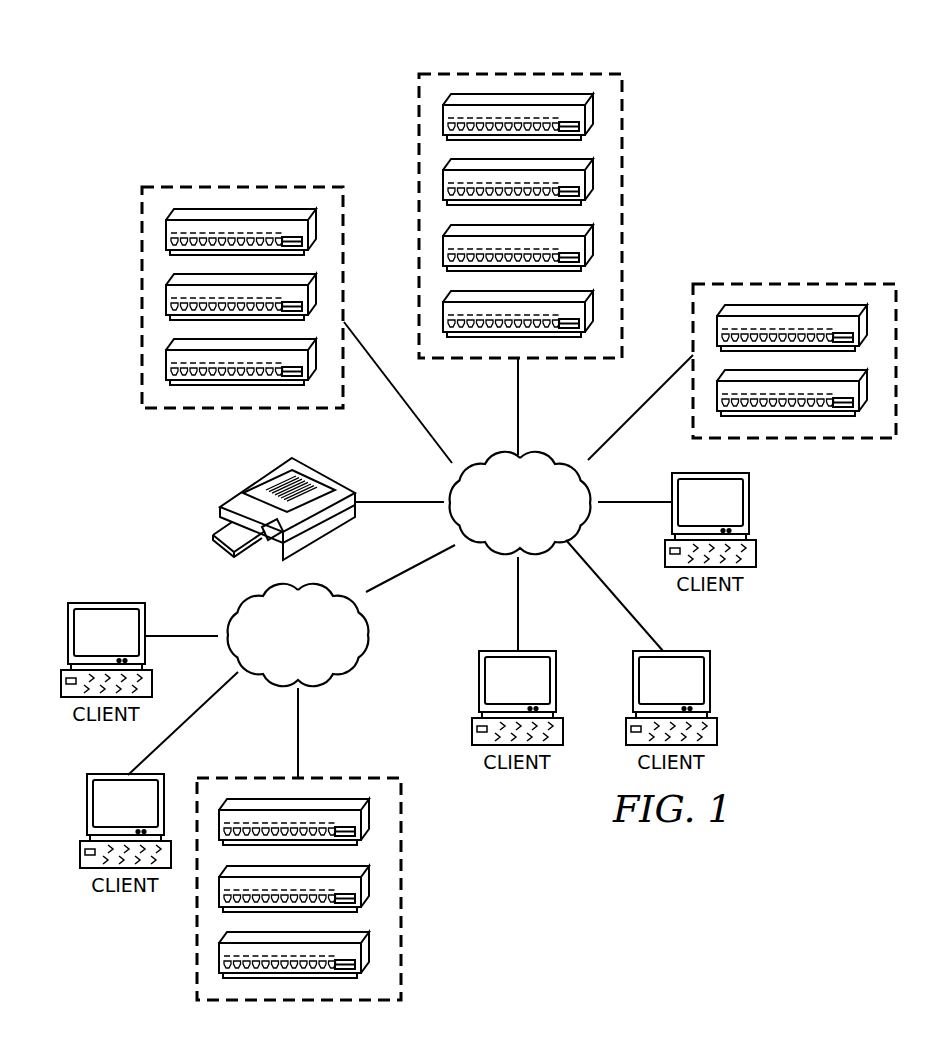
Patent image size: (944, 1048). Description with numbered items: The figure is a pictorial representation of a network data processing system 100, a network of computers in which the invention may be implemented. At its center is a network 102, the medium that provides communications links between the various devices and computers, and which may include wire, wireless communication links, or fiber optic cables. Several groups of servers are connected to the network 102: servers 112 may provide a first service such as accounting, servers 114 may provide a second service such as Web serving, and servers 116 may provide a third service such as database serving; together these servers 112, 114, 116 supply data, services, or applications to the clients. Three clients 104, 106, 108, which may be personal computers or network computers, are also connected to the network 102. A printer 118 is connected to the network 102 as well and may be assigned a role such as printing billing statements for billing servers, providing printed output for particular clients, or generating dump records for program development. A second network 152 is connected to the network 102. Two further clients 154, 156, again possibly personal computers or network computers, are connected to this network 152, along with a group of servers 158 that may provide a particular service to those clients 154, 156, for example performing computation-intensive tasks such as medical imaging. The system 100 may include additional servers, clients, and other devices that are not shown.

The network data processing system 100 is at (706, 160).
The network 102 is at (488, 452).
The client 104 is at (748, 502).
The client 106 is at (708, 680).
The client 108 is at (479, 680).
The servers 112 is at (208, 182).
The servers 114 is at (482, 66).
The servers 116 is at (810, 276).
The printer 118 is at (220, 507).
The network 152 is at (330, 685).
The client 154 is at (68, 636).
The client 156 is at (87, 805).
The servers 158 is at (410, 917).